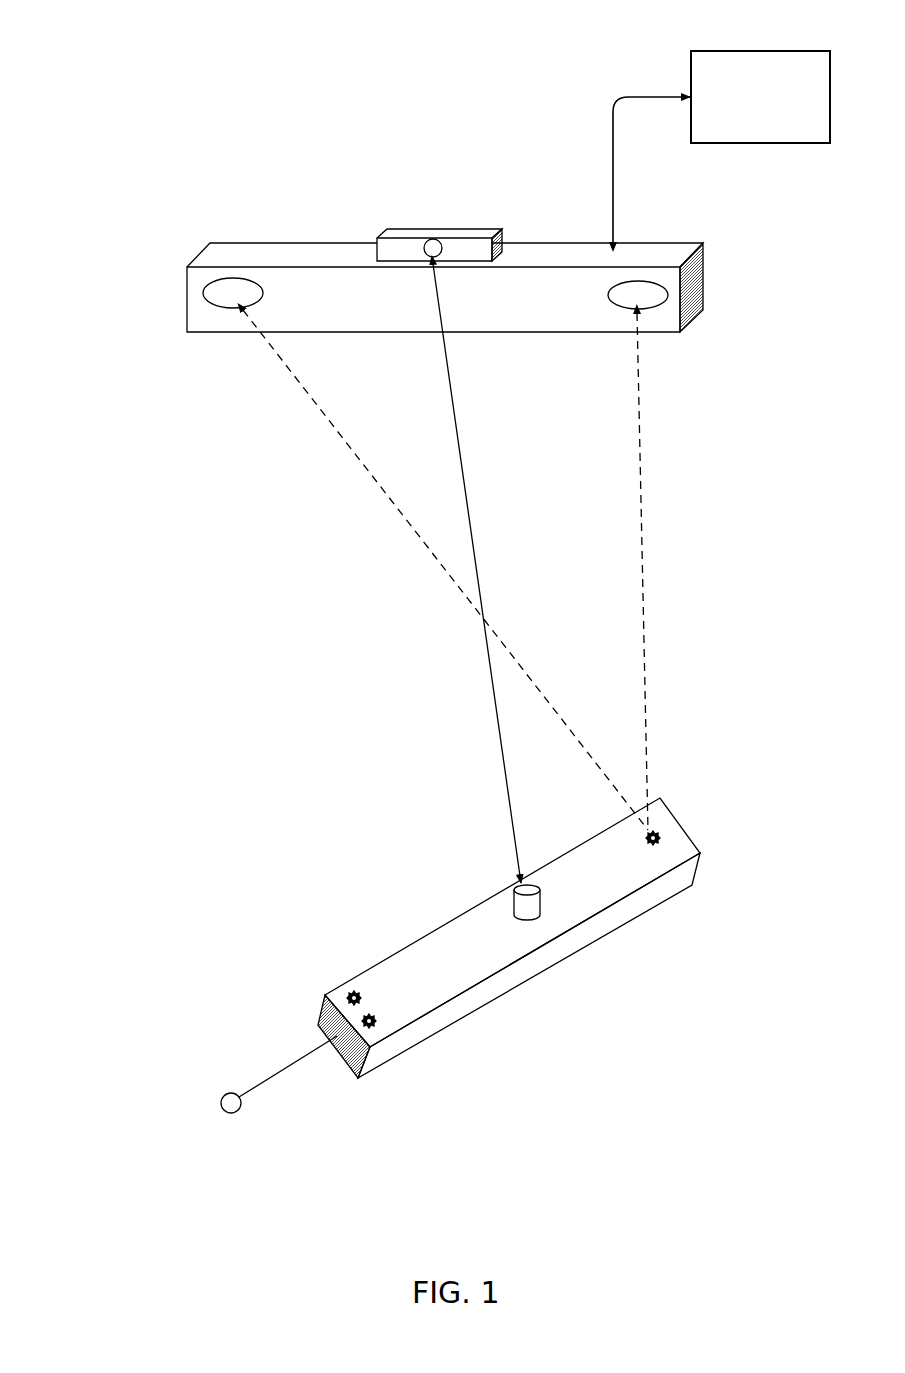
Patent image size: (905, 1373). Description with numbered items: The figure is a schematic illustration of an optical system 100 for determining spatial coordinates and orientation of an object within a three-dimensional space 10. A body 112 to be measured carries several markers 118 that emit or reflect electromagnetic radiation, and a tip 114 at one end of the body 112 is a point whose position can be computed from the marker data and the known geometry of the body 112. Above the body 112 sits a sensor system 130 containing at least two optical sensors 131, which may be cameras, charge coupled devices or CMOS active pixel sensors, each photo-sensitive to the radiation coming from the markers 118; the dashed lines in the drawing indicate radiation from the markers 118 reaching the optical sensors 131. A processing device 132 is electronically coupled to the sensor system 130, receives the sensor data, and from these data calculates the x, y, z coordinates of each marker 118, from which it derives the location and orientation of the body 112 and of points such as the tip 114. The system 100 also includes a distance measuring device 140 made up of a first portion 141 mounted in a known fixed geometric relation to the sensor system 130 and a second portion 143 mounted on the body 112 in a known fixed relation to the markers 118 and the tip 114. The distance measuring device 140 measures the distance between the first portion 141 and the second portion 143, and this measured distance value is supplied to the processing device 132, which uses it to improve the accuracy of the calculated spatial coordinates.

The system 100 is at (110, 110).
The three-dimensional space 10 is at (269, 723).
The body 112 is at (428, 957).
The tip 114 is at (222, 1100).
The markers 118 is at (348, 993).
The sensor system 130 is at (280, 250).
The optical sensors 131 is at (212, 290).
The processing device 132 is at (721, 147).
The distance measuring device 140 is at (405, 186).
The first portion 141 is at (440, 240).
The second portion 143 is at (513, 900).